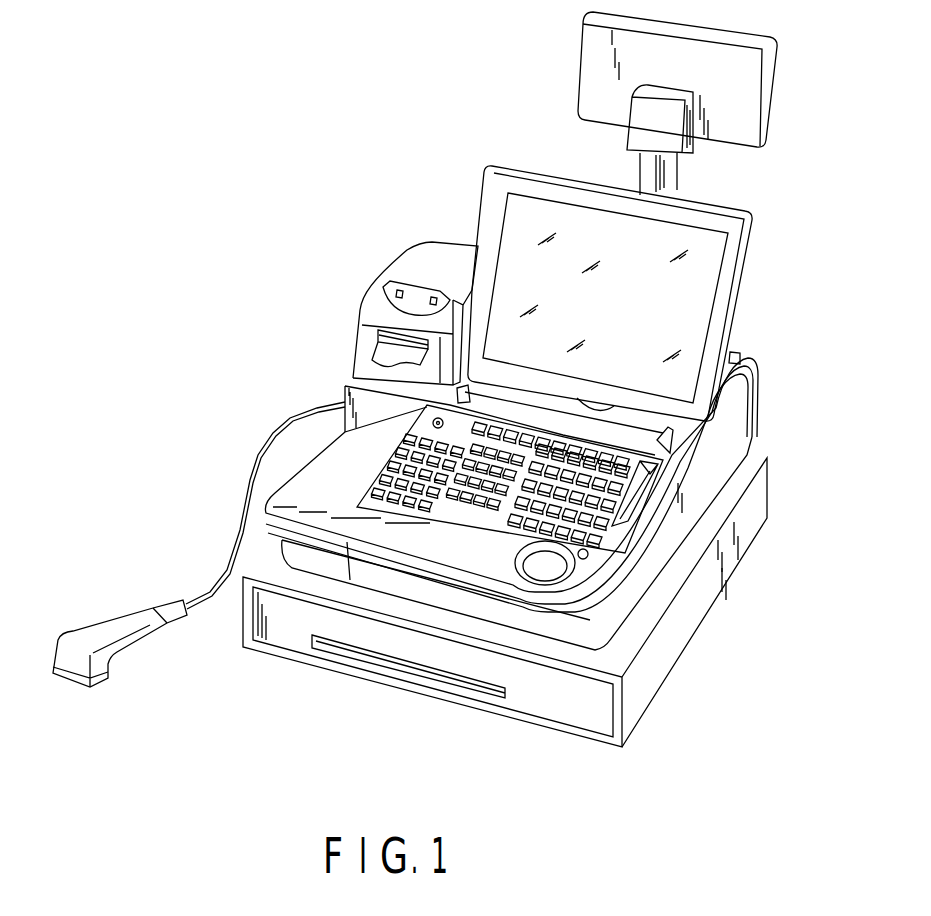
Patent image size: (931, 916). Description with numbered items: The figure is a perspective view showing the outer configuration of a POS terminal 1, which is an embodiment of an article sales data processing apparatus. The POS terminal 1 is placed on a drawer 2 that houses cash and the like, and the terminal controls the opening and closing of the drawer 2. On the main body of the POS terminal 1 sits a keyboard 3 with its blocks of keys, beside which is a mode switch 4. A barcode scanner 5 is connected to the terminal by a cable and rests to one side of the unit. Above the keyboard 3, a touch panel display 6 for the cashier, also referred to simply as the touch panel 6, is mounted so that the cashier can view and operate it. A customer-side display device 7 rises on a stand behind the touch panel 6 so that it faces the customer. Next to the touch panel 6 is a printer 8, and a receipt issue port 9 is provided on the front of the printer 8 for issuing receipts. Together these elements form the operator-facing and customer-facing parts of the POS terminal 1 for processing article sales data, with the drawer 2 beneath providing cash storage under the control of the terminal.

The POS terminal 1 is at (747, 363).
The drawer 2 is at (668, 652).
The keyboard 3 is at (437, 498).
The mode switch 4 is at (417, 425).
The barcode scanner 5 is at (80, 645).
The touch panel display 6 is at (733, 272).
The customer-side display device 7 is at (770, 87).
The printer 8 is at (423, 265).
The receipt issue port 9 is at (372, 336).